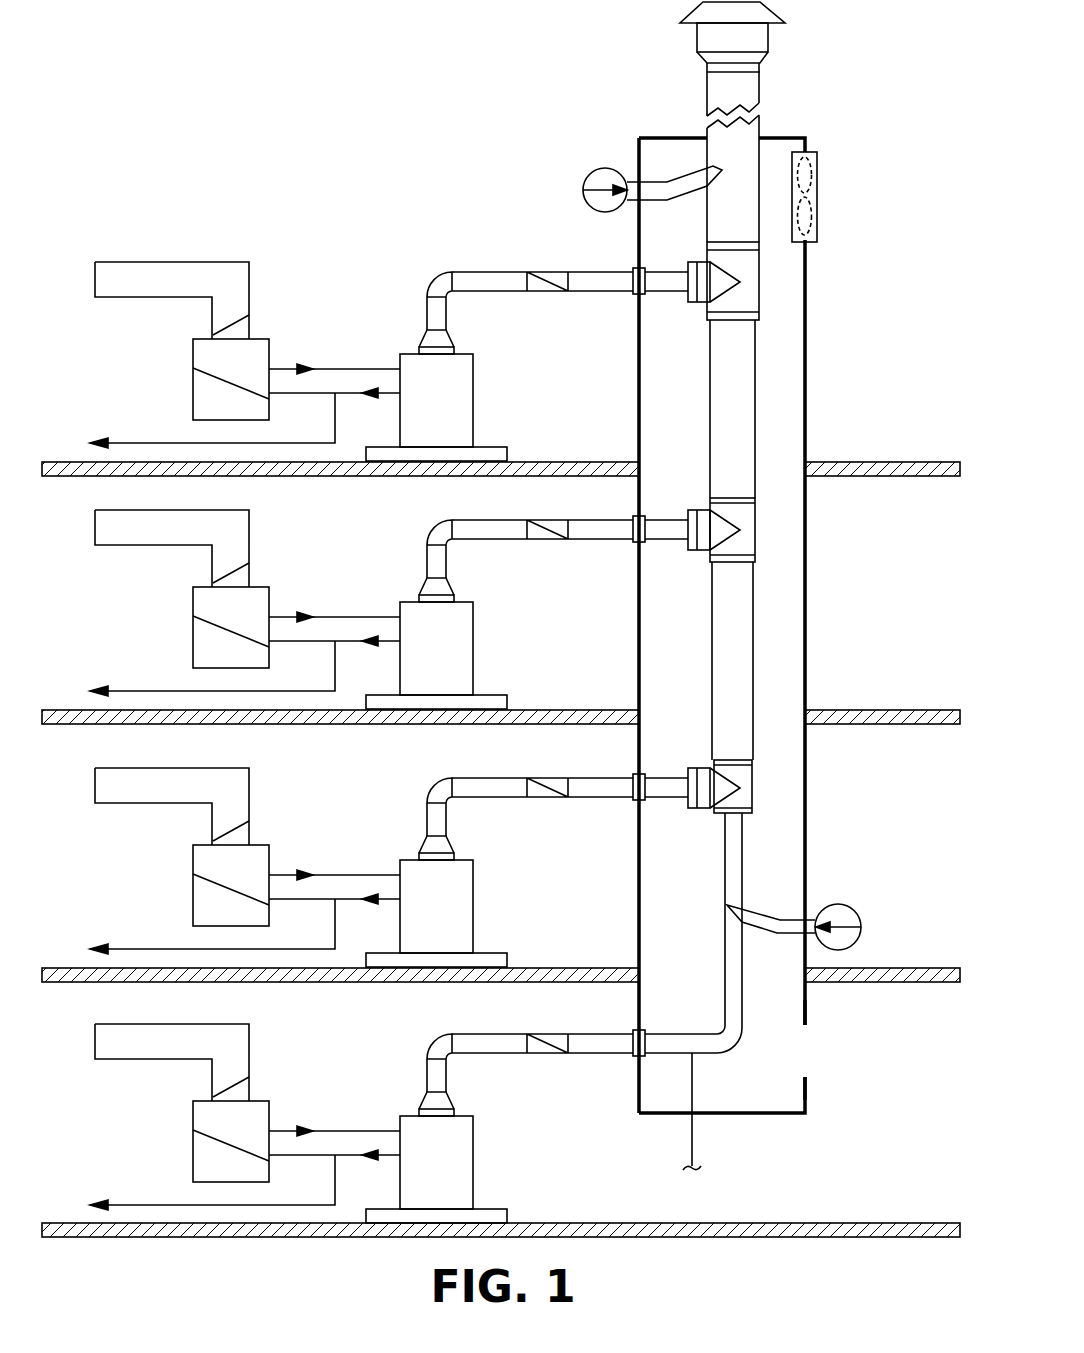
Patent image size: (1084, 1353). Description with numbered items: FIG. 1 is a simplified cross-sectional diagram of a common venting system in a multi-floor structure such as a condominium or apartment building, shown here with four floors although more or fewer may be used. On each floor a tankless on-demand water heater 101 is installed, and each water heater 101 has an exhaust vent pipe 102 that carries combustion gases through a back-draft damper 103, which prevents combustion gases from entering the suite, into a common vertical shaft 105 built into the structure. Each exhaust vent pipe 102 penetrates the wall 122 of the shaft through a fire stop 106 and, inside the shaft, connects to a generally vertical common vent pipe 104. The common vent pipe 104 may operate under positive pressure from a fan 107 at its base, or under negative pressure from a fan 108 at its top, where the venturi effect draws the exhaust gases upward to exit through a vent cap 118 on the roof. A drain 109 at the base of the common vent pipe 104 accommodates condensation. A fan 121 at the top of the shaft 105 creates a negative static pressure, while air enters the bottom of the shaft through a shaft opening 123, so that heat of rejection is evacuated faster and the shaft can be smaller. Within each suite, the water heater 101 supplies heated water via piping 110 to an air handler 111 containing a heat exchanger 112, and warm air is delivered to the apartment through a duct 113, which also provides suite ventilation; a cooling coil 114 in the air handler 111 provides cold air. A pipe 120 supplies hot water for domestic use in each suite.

The tankless on-demand water heater 101 is at (474, 402).
The exhaust vent pipe 102 is at (437, 272).
The back-draft damper 103 is at (553, 271).
The common vent pipe 104 is at (757, 387).
The common vertical shaft 105 is at (822, 311).
The fire stop 106 is at (632, 281).
The fan 107 is at (838, 904).
The fan 108 is at (599, 168).
The drain 109 is at (693, 1143).
The piping 110 is at (337, 368).
The air handler 111 is at (193, 400).
The heat exchanger 112 is at (214, 378).
The duct 113 is at (172, 262).
The cooling coil 114 is at (213, 324).
The vent cap 118 is at (770, 36).
The pipe 120 is at (128, 443).
The fan 121 is at (818, 196).
The wall 122 is at (637, 357).
The shaft opening 123 is at (803, 1052).